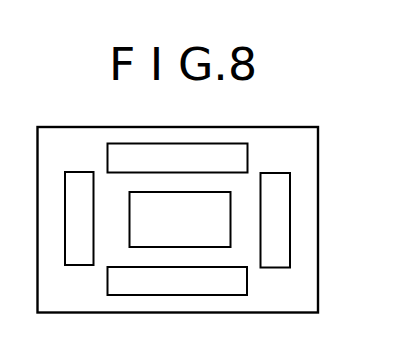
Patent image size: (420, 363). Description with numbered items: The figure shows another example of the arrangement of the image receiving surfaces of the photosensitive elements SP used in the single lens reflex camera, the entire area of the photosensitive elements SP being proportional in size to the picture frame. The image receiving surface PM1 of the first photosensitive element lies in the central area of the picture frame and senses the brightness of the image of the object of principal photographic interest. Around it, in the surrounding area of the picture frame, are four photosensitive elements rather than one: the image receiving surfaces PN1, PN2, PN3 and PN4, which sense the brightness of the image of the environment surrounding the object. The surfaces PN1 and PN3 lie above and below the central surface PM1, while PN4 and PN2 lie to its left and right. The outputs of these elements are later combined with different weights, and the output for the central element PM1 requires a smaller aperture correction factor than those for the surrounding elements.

The photosensitive elements SP is at (318, 169).
The image receiving surface of second photosensitive element PN1 is at (178, 160).
The image receiving surface of photosensitive element for environment PN2 is at (276, 220).
The image receiving surface of photosensitive element for environment PN3 is at (178, 282).
The image receiving surface of photosensitive element for environment PN4 is at (80, 218).
The image receiving surface of first photosensitive element PM1 is at (180, 219).